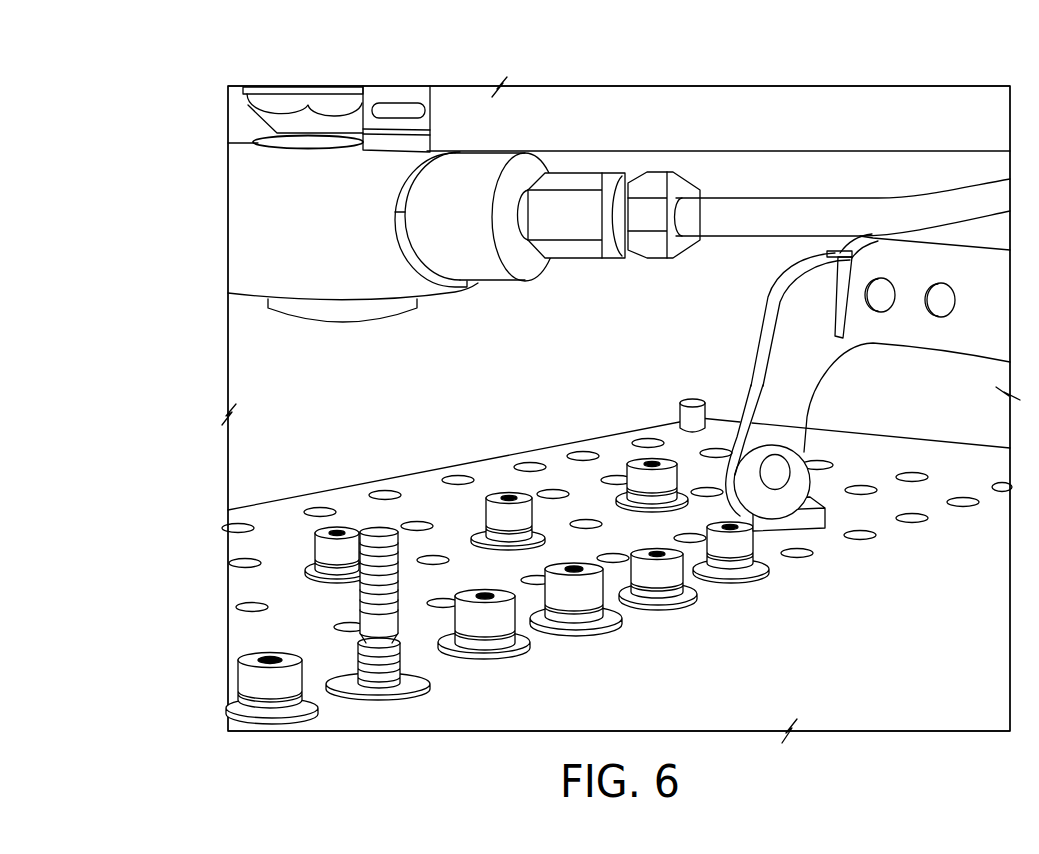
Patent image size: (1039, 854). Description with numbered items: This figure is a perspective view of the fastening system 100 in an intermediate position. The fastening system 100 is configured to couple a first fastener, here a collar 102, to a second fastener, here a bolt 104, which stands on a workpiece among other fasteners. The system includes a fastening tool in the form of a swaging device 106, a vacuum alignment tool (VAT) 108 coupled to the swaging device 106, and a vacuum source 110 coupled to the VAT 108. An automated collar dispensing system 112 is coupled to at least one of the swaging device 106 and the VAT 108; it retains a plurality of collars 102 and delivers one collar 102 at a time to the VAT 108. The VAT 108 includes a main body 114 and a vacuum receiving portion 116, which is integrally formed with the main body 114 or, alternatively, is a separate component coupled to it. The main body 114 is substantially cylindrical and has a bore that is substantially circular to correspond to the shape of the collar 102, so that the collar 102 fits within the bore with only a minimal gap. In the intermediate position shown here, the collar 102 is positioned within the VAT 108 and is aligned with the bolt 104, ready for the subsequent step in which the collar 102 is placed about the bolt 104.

The fastening system 100 is at (180, 58).
The collar 102 is at (343, 322).
The bolt 104 is at (374, 613).
The swaging device 106 is at (277, 107).
The vacuum alignment tool 108 is at (255, 172).
The vacuum source 110 is at (737, 217).
The automated collar dispensing system 112 is at (652, 105).
The main body 114 is at (282, 257).
The vacuum receiving portion 116 is at (490, 267).